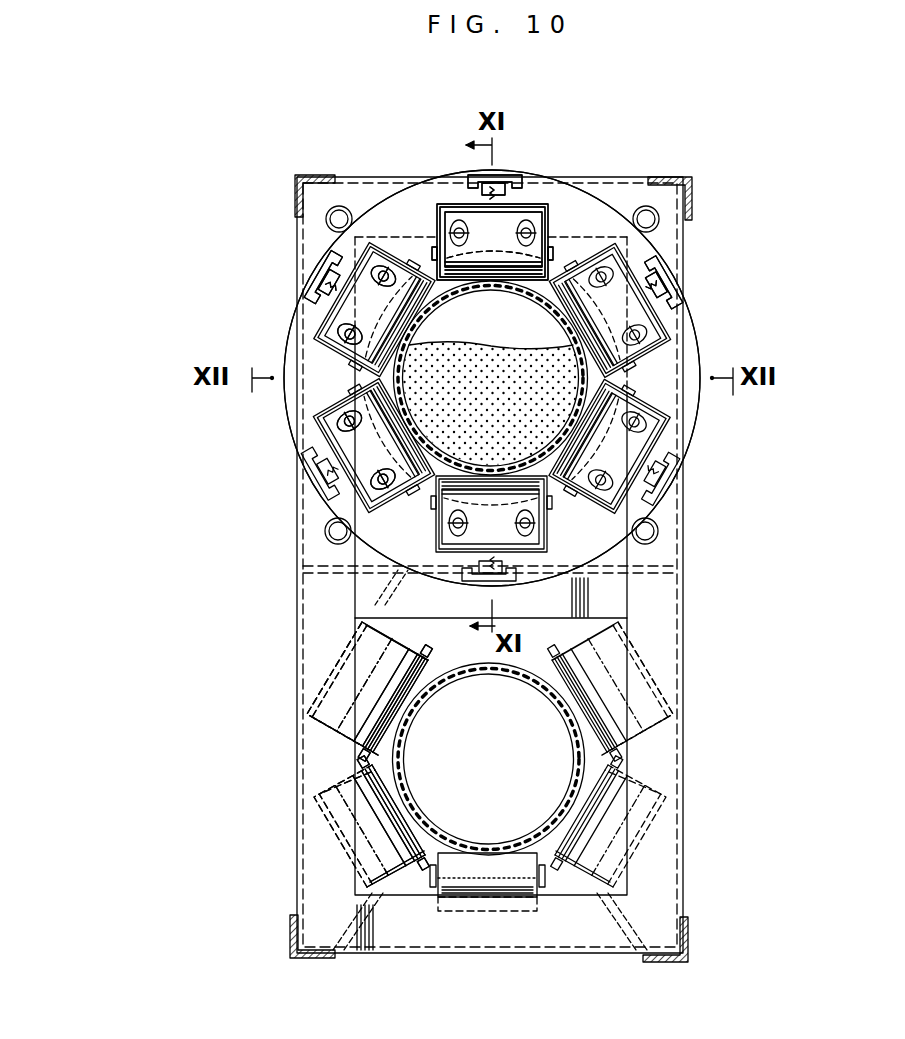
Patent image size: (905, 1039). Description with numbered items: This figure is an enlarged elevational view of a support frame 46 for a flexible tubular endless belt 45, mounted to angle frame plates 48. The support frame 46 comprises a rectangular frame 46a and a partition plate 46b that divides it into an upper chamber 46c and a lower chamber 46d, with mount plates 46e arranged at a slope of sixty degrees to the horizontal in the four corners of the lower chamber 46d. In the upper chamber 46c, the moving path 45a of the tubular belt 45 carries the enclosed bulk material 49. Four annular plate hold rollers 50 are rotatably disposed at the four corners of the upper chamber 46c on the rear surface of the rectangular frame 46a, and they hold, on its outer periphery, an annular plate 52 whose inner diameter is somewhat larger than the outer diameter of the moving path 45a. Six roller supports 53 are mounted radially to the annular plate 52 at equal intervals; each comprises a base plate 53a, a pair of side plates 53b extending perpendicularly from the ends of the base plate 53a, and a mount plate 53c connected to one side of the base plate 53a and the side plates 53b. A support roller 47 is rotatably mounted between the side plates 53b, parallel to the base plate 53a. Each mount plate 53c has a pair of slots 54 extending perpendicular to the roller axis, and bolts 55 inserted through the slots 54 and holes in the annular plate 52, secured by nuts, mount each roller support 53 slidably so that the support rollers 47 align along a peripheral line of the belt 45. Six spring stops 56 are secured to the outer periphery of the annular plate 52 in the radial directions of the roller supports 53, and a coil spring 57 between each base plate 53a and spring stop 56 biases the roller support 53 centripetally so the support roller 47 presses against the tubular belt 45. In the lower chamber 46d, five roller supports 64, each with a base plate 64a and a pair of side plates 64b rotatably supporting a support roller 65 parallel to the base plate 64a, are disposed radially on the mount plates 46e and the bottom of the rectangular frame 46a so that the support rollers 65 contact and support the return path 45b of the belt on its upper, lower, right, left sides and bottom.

The flexible tubular endless belt 45 is at (434, 722).
The moving path 45a is at (552, 300).
The return path 45b is at (543, 714).
The support frame 46 is at (628, 180).
The rectangular frame 46a is at (688, 567).
The partition plate 46b is at (612, 576).
The upper chamber 46c is at (365, 560).
The lower chamber 46d is at (360, 622).
The mount plates 46e is at (352, 888).
The support rollers 47 is at (500, 238).
The angle frame plates 48 is at (692, 200).
The bulk material 49 is at (468, 352).
The annular plate hold rollers 50 is at (339, 206).
The annular plate 52 is at (463, 162).
The roller supports 53 is at (547, 198).
The base plate 53a is at (450, 205).
The side plates 53b is at (433, 222).
The mount plate 53c is at (552, 205).
The slots 54 is at (348, 330).
The bolts 55 is at (362, 347).
The spring stops 56 is at (328, 275).
The coil spring 57 is at (318, 290).
The roller supports 64 is at (351, 635).
The base plate 64a is at (352, 948).
The side plates 64b is at (356, 754).
The support roller 65 is at (372, 697).